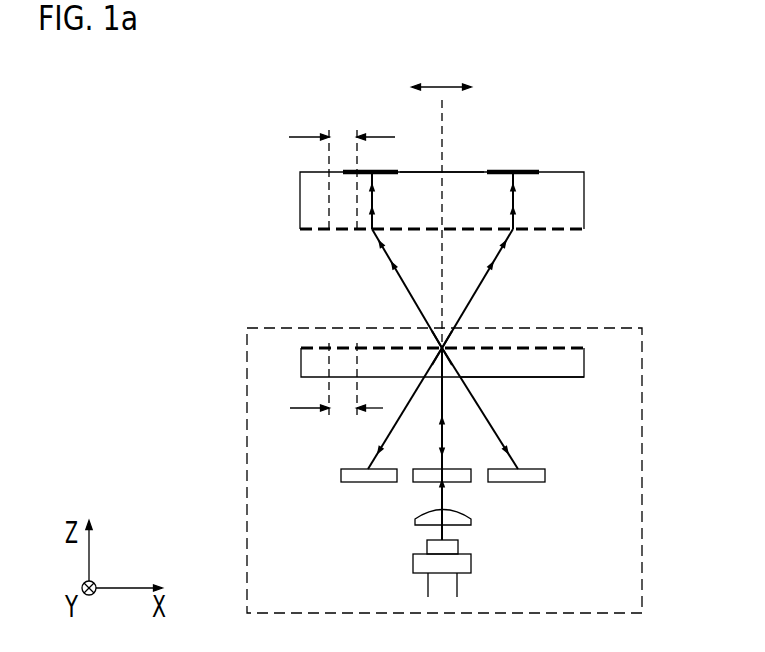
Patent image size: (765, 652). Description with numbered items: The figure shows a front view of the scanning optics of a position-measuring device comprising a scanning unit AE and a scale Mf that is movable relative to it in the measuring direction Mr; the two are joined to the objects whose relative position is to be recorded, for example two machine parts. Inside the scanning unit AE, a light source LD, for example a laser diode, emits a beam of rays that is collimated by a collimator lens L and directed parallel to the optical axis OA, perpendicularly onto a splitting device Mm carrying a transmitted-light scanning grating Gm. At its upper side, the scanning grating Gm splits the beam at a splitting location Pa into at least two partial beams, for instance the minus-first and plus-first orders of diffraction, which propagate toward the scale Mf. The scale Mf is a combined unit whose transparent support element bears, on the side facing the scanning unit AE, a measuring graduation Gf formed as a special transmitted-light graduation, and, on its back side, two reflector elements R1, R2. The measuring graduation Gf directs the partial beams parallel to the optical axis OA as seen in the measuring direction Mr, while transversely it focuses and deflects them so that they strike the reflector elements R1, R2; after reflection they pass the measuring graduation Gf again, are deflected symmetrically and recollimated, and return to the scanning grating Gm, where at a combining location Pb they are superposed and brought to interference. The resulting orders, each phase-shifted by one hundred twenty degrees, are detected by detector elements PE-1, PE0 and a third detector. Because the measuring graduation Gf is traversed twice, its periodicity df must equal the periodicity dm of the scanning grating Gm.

The scanning unit AE is at (643, 510).
The optical axis OA is at (443, 133).
The measuring direction Mr is at (442, 72).
The periodicity df is at (342, 165).
The periodicity dm is at (336, 379).
The measuring graduation Gf is at (563, 229).
The scale Mf is at (458, 178).
The reflector element R2 is at (372, 171).
The reflector element R1 is at (511, 170).
The transmitted-light scanning grating Gm is at (562, 349).
The splitting device Mm is at (524, 365).
The splitting location Pa is at (440, 347).
The combining location Pb is at (382, 326).
The detector element PE-1 is at (352, 473).
The detector element PE0 is at (424, 473).
The collimator lens L is at (454, 515).
The light source LD is at (458, 562).